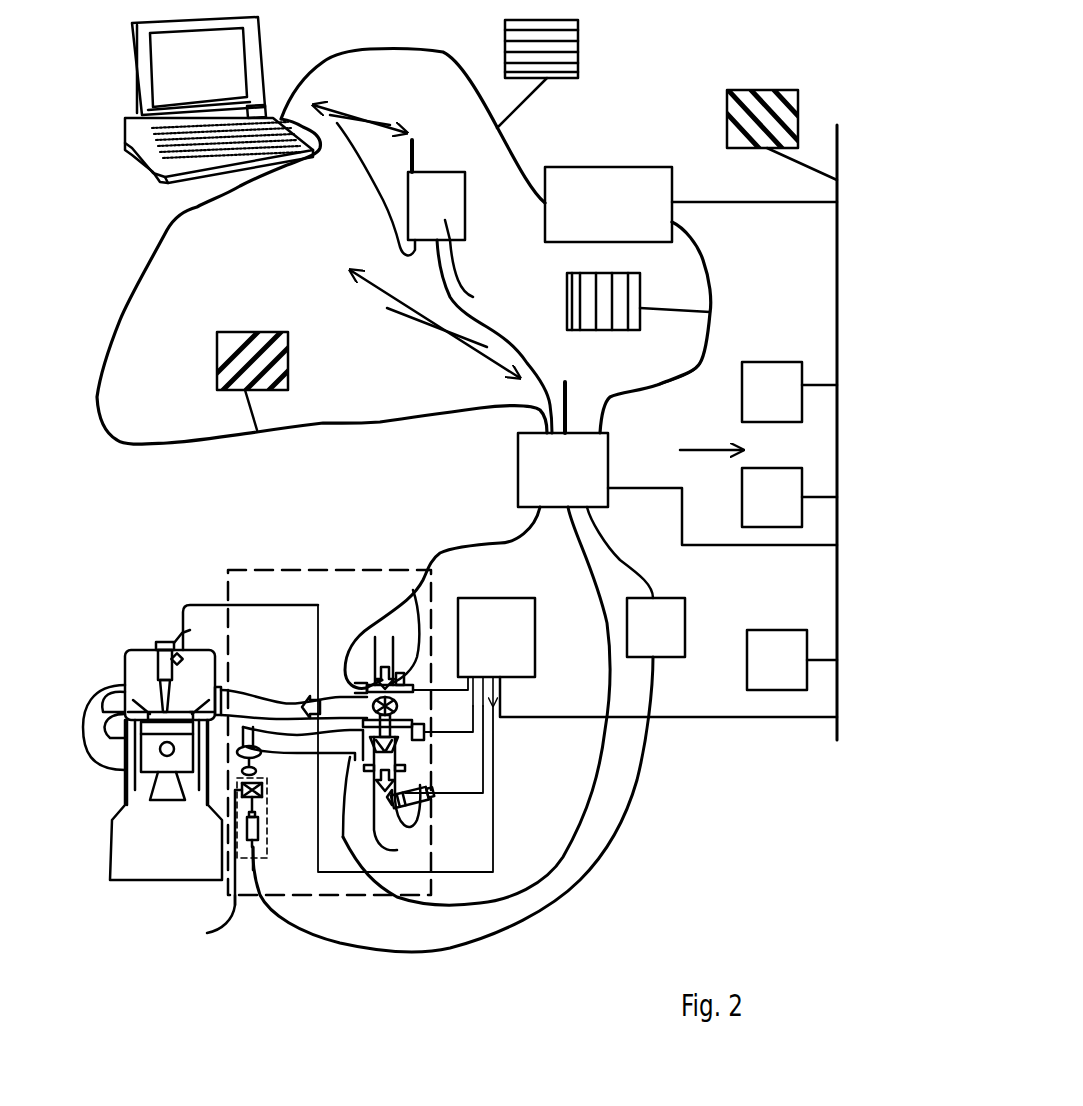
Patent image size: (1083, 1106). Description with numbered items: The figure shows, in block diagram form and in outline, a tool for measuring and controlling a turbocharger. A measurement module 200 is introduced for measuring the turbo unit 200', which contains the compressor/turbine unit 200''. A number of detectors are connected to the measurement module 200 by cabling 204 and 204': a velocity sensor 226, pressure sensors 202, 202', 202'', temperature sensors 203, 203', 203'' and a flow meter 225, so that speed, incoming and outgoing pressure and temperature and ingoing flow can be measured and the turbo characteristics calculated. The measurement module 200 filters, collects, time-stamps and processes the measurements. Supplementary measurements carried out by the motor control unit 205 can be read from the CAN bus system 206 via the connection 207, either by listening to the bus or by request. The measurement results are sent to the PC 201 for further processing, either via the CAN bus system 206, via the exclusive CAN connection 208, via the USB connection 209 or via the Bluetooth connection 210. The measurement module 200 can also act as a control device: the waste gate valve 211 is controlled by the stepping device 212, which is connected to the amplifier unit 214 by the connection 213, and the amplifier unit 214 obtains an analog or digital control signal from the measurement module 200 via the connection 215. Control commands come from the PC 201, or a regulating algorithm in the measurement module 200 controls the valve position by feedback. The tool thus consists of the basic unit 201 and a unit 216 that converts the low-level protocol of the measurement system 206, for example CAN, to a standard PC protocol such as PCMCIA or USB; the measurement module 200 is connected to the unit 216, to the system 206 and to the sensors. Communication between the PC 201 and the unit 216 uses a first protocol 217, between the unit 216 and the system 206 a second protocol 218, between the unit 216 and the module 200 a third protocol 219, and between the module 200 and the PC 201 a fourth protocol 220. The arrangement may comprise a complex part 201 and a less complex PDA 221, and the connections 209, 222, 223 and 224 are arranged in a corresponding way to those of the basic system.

The measurement module 200 is at (524, 444).
The turbo unit 200' is at (311, 697).
The compressor/turbine unit 200'' is at (291, 685).
The PC 201 is at (147, 193).
The pressure sensor 202 is at (432, 813).
The pressure sensor 202' is at (271, 816).
The pressure sensor 202'' is at (309, 657).
The temperature sensor 203 is at (410, 795).
The temperature sensor 203' is at (277, 829).
The temperature sensor 203'' is at (425, 639).
The cabling 204 is at (442, 593).
The cabling 204' is at (476, 706).
The motor control unit 205 is at (523, 617).
The CAN bus system 206 is at (689, 452).
The connection 207 is at (680, 527).
The exclusive CAN connection 208 is at (620, 397).
The USB connection 209 is at (332, 423).
The Bluetooth connection 210 is at (413, 322).
The waste gate valve 211 is at (206, 925).
The stepping device 212 is at (243, 860).
The connection 213 is at (623, 828).
The amplifier unit 214 is at (670, 640).
The connection 215 is at (627, 560).
The protocol converter unit 216 is at (610, 167).
The first protocol 217 is at (580, 43).
The second system protocol 218 is at (728, 113).
The third protocol 219 is at (567, 310).
The fourth protocol 220 is at (217, 348).
The PDA 221 is at (479, 269).
The connection 222 is at (373, 110).
The connection 223 is at (377, 202).
The connection 224 is at (523, 348).
The flow meter 225 is at (453, 703).
The velocity sensor 226 is at (412, 740).